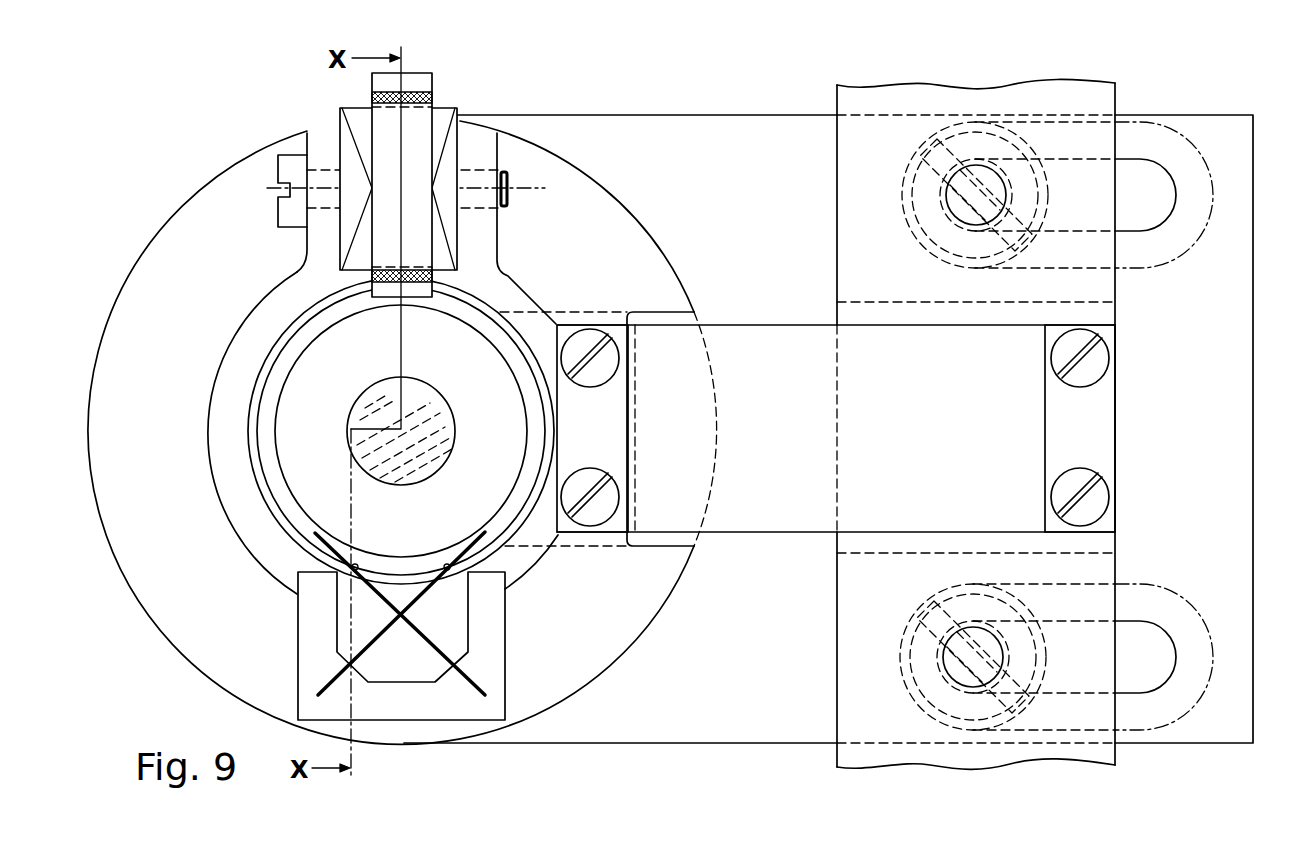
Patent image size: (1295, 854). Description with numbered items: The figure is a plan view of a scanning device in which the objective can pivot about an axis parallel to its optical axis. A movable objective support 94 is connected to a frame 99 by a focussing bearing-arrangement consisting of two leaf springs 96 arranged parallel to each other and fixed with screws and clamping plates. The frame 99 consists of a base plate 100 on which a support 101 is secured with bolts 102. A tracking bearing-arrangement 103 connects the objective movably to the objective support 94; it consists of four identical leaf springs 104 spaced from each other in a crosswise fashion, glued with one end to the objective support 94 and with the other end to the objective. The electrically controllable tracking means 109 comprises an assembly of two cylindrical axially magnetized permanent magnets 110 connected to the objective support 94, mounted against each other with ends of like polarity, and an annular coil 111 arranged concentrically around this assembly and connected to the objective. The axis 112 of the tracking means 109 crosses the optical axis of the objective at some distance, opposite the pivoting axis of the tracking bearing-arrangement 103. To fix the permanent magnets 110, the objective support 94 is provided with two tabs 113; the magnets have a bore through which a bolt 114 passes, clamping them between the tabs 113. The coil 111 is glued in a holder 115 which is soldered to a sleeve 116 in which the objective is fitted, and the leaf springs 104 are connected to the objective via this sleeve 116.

The objective support 94 is at (515, 295).
The leaf springs 96 is at (767, 512).
The frame 99 is at (1240, 113).
The base plate 100 is at (1238, 713).
The support 101 is at (1090, 570).
The bolts 102 is at (903, 182).
The tracking bearing-arrangement 103 is at (385, 608).
The leaf springs 104 is at (372, 640).
The tracking means 109 is at (444, 172).
The permanent magnets 110 is at (360, 123).
The coil 111 is at (460, 107).
The axis 112 is at (541, 188).
The tabs 113 is at (320, 245).
The bolt 114 is at (278, 217).
The holder 115 is at (388, 84).
The sleeve 116 is at (302, 335).